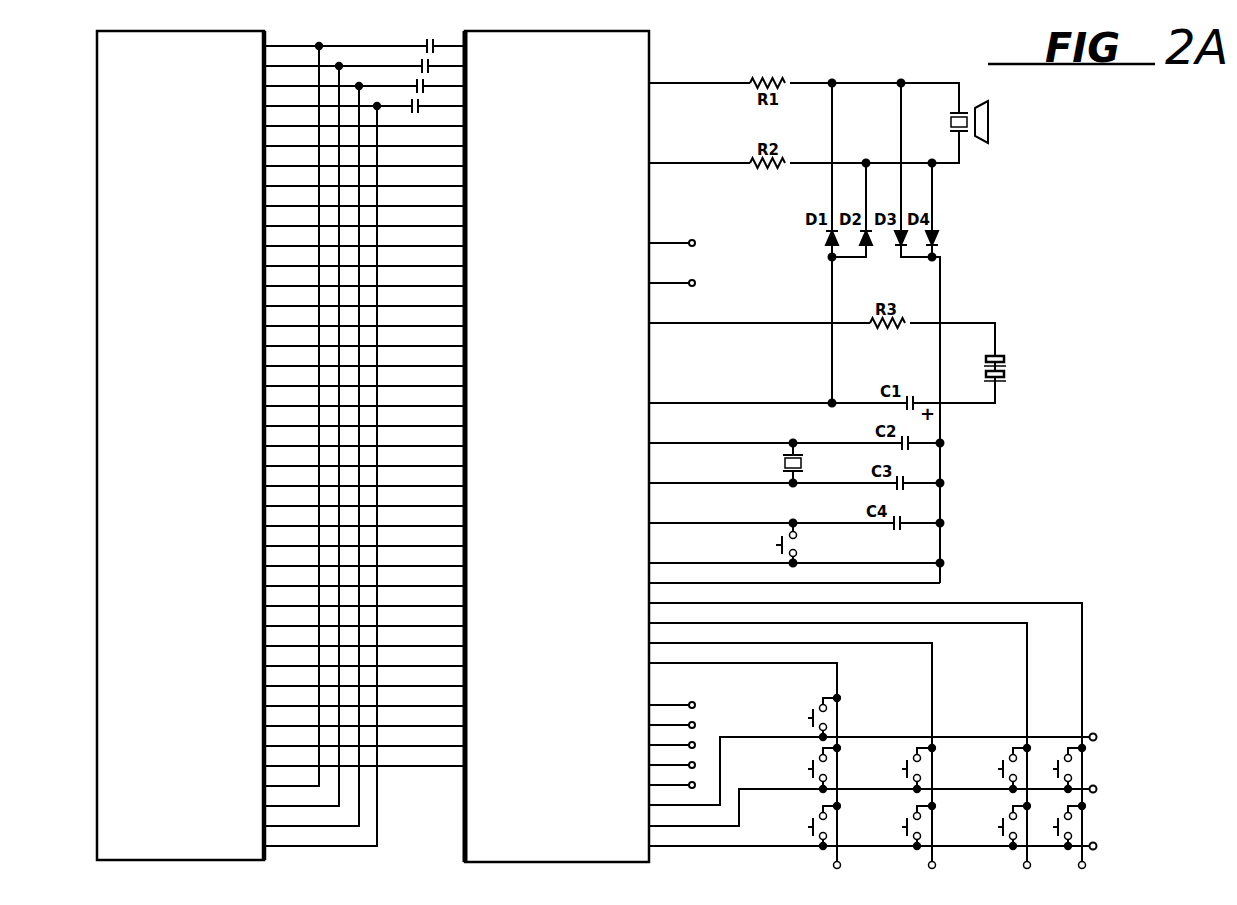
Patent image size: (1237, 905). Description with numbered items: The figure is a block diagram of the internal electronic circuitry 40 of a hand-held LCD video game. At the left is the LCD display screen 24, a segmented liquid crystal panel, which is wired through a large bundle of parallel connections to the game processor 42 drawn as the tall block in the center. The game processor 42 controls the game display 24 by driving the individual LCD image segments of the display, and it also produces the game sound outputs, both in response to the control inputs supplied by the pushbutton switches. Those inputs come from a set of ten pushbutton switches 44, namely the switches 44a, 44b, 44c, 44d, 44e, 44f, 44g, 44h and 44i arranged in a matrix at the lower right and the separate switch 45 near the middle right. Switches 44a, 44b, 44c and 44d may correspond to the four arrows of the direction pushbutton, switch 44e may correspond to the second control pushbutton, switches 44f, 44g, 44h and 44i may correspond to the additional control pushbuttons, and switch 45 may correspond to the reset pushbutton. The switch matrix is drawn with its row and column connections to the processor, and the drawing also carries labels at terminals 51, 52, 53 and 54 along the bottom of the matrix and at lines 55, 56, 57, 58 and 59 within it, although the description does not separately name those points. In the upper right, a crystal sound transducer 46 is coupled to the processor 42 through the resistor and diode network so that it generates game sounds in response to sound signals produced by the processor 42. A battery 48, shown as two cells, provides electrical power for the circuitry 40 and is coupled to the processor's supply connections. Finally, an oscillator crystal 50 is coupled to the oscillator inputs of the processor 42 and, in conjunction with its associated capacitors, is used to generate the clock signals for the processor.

The LCD display screen 24 is at (97, 822).
The internal electronic circuitry 40 is at (410, 812).
The game processor 42 is at (465, 826).
The pushbutton switches 44 is at (798, 852).
The pushbutton switch 44a is at (835, 698).
The pushbutton switch 44b is at (823, 752).
The pushbutton switch 44c is at (823, 811).
The pushbutton switch 44d is at (917, 752).
The pushbutton switch 44e is at (917, 811).
The pushbutton switch 44f is at (1013, 752).
The pushbutton switch 44g is at (1013, 811).
The pushbutton switch 44h is at (1075, 752).
The pushbutton switch 44i is at (1075, 811).
The pushbutton switch 45 is at (797, 545).
The crystal sound transducer 46 is at (964, 130).
The battery 48 is at (1000, 356).
The oscillator crystal 50 is at (797, 452).
The key output line 51 is at (827, 768).
The key output line 52 is at (921, 758).
The key output line 53 is at (1016, 748).
The key output line 54 is at (1071, 738).
The key input line 55 is at (740, 771).
The key line 56 is at (884, 727).
The key line 57 is at (979, 727).
The key line 58 is at (1054, 727).
The key line 59 is at (783, 687).